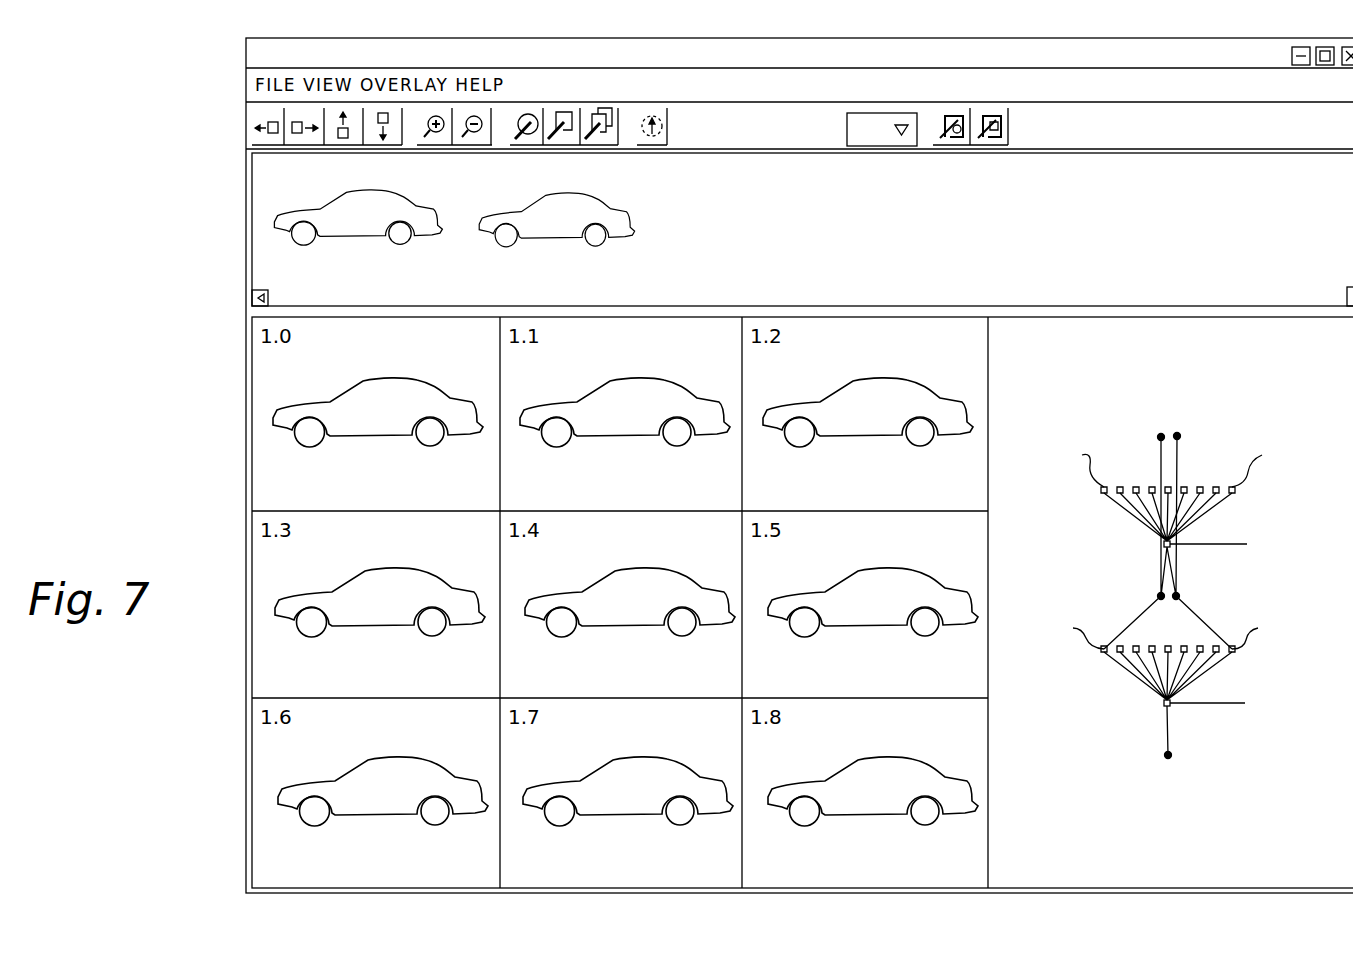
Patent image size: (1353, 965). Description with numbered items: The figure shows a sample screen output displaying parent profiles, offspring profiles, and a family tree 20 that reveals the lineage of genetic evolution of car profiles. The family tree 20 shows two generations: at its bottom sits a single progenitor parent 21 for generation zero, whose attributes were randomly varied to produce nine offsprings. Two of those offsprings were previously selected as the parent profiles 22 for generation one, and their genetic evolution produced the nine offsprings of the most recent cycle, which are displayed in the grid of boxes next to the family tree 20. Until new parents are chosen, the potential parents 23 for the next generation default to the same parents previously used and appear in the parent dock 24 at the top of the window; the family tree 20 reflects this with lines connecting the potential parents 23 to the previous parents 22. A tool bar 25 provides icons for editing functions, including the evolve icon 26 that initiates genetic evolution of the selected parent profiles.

The family tree 20 is at (1228, 412).
The progenitor parent 21 is at (1171, 757).
The parent profiles 22 is at (1205, 596).
The potential parents 23 is at (1153, 429).
The parent dock 24 is at (232, 232).
The tool bar 25 is at (232, 130).
The evolve icon 26 is at (657, 148).